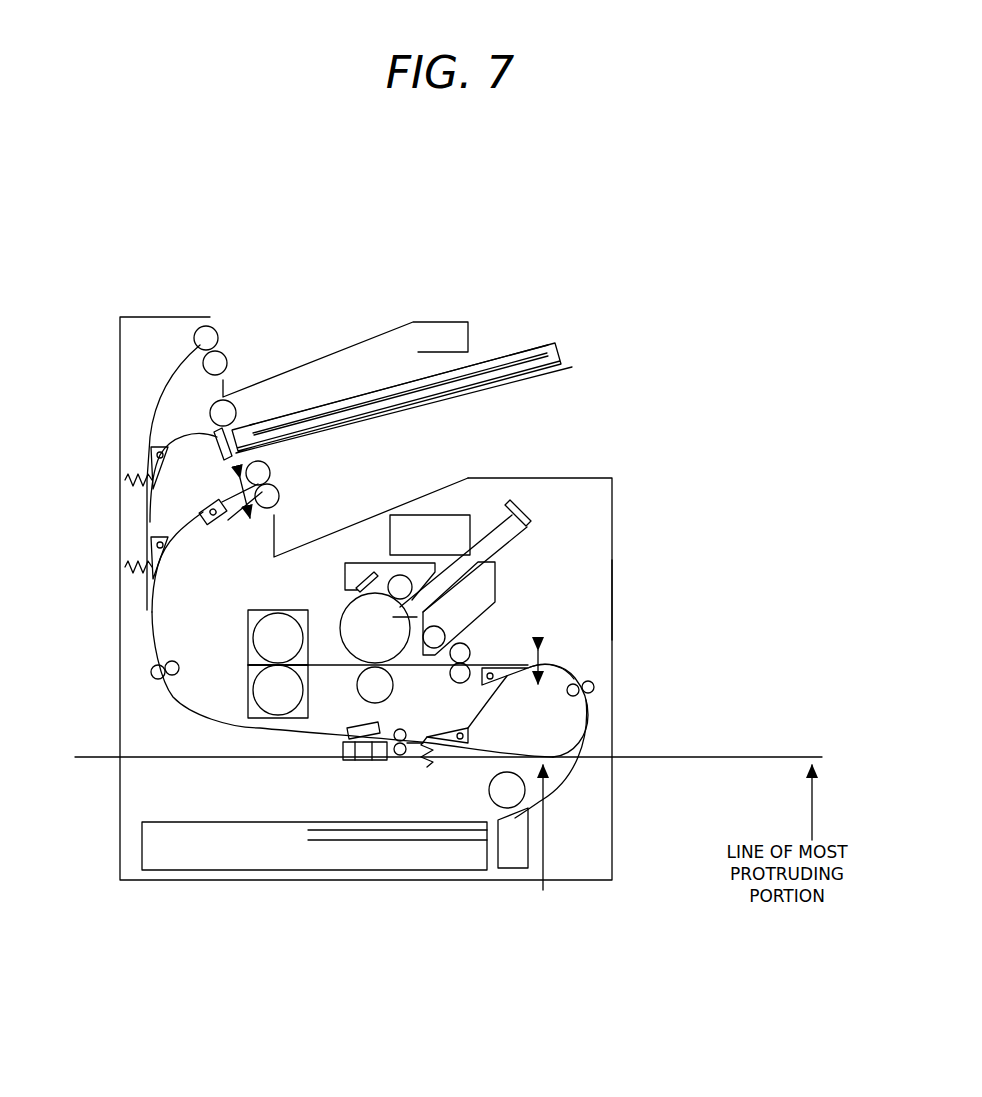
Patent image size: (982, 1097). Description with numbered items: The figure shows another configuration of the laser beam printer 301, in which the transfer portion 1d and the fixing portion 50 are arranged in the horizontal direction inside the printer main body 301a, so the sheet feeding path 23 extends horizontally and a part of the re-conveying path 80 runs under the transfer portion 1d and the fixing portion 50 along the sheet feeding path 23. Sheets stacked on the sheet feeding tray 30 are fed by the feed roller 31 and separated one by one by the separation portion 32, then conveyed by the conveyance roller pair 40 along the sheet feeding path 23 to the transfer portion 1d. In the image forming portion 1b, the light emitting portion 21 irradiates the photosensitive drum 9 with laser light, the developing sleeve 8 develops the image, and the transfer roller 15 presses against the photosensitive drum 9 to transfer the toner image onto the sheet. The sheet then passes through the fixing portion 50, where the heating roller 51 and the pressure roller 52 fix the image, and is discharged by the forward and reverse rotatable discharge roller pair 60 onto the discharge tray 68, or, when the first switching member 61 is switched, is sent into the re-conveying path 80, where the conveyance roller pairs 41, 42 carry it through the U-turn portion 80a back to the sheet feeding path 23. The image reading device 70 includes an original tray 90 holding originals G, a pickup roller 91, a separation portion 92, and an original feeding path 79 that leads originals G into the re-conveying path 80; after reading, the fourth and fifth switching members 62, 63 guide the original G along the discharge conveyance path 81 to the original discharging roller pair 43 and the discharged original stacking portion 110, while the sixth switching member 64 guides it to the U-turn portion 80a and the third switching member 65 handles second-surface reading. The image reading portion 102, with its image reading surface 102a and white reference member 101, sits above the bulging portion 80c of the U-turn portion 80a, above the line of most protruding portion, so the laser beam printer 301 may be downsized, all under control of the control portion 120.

The laser beam printer 301 is at (512, 230).
The printer main body 301a is at (613, 605).
The image reading device 70 is at (427, 339).
The discharged original stacking portion 110 is at (305, 366).
The original tray 90 is at (560, 347).
The original G is at (512, 342).
The original discharging roller pair 43 is at (208, 335).
The pickup roller 91 is at (237, 408).
The discharge conveyance path 81 is at (172, 382).
The original feeding path 79 is at (172, 424).
The fifth switching member 63 is at (147, 453).
The fourth switching member 62 is at (150, 545).
The separation portion 92 is at (198, 512).
The discharge roller pair 60 is at (270, 473).
The first switching member 61 is at (231, 524).
The discharge tray 68 is at (403, 505).
The control portion 120 is at (455, 514).
The light emitting portion 21 is at (532, 514).
The image forming portion 1b is at (513, 554).
The transfer portion 1d is at (340, 652).
The photosensitive drum 9 is at (416, 616).
The developing sleeve 8 is at (444, 634).
The heating roller 51 is at (270, 632).
The fixing portion 50 is at (250, 690).
The pressure roller 52 is at (258, 707).
The conveyance roller pair 41 is at (152, 673).
The sheet feeding path 23 is at (423, 668).
The transfer roller 15 is at (368, 690).
The conveyance roller pair 40 is at (472, 654).
The sixth switching member 64 is at (471, 736).
The re-conveying path 80 is at (157, 640).
The U-turn portion 80a is at (591, 712).
The third switching member 65 is at (577, 679).
The conveyance roller pair 42 is at (403, 757).
The image reading portion 102 is at (340, 760).
The image reading surface 102a is at (358, 762).
The white reference member 101 is at (377, 762).
The sheet feeding tray 30 is at (183, 870).
The feed roller 31 is at (515, 791).
The separation portion 32 is at (520, 845).
The bulging portion 80c is at (543, 851).